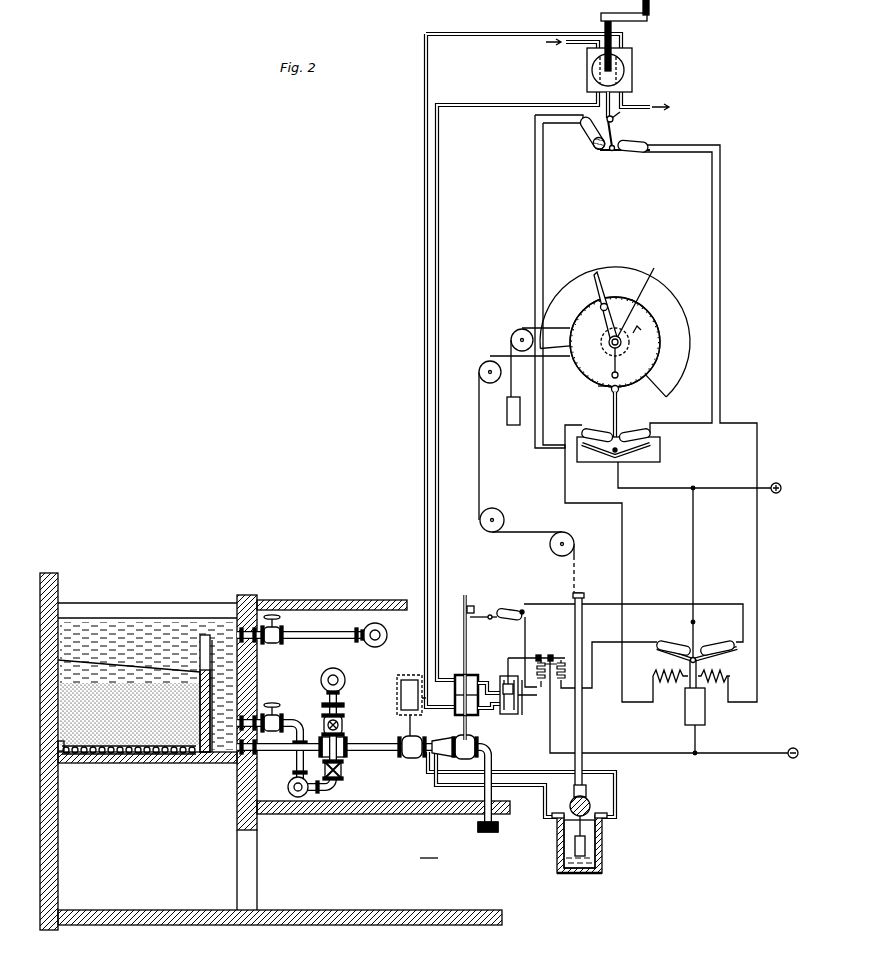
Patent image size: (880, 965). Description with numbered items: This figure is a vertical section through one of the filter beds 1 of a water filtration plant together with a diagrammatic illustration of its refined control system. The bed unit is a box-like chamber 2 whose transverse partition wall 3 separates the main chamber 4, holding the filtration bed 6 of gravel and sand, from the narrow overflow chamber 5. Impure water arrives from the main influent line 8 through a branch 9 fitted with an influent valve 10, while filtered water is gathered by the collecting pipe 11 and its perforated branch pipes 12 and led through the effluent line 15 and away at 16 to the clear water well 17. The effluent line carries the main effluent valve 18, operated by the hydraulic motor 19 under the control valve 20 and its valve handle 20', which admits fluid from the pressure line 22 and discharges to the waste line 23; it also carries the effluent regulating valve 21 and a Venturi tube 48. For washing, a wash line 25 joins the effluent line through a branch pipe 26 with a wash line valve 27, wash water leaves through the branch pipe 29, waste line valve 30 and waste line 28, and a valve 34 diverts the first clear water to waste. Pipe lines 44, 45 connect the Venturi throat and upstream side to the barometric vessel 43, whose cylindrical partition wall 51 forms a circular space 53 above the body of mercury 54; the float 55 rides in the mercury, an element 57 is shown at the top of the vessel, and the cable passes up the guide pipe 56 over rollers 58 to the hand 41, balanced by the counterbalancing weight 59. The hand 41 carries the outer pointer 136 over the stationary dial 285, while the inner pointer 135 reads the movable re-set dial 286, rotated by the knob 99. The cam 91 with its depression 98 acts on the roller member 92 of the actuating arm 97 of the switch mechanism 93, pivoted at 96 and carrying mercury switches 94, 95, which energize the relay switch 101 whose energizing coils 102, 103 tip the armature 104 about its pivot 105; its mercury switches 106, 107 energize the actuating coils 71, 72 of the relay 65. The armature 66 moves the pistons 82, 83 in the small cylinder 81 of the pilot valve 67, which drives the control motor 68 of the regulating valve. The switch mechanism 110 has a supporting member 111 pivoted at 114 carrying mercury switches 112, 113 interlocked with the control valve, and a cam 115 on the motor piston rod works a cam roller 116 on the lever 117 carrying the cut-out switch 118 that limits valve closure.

The filter bed 1 is at (40, 676).
The box-like chamber 2 is at (135, 603).
The transverse partition wall 3 is at (205, 635).
The main chamber 4 is at (100, 667).
The overflow chamber 5 is at (211, 725).
The filtration bed 6 is at (142, 756).
The main influent line 8 is at (388, 633).
The branch 9 is at (322, 635).
The influent valve 10 is at (273, 612).
The collecting pipe 11 is at (58, 742).
The branch pipe 12 is at (110, 763).
The effluent line 15 is at (375, 744).
The outlet to clear water well 16 is at (478, 826).
The clear water well 17 is at (429, 850).
The main effluent valve 18 is at (411, 760).
The hydraulic motor 19 is at (400, 684).
The control valve 20 is at (631, 56).
The valve handle 20' is at (640, 12).
The effluent regulating valve 21 is at (460, 758).
The pressure line 22 is at (566, 44).
The waste line 23 is at (646, 105).
The wash line 25 is at (321, 675).
The branch pipe 26 is at (344, 705).
The wash line valve 27 is at (343, 724).
The waste line 28 is at (298, 798).
The branch pipe 29 is at (295, 768).
The waste line valve 30 is at (273, 707).
The valve 34 is at (343, 770).
The hand 41 is at (650, 275).
The barometric vessel 43 is at (602, 840).
The pipe line 44 is at (618, 778).
The pipe line 45 is at (545, 805).
The Venturi tube 48 is at (460, 738).
The cylindrical partition wall 51 is at (564, 838).
The circular space 53 is at (564, 828).
The body of mercury 54 is at (580, 873).
The float 55 is at (564, 860).
The guide pipe 56 is at (583, 736).
The float 57 is at (590, 810).
The roller 58 is at (512, 348).
The counterbalancing weight 59 is at (513, 425).
The relay 65 is at (566, 690).
The armature 66 is at (549, 655).
The pilot valve 67 is at (522, 716).
The control motor 68 is at (455, 680).
The actuating coil 71 is at (567, 672).
The actuating coil 72 is at (548, 686).
The small cylinder 81 is at (507, 660).
The piston 82 is at (503, 684).
The piston 83 is at (506, 714).
The cam 91 is at (568, 367).
The roller member 92 is at (620, 390).
The switch mechanism 93 is at (660, 452).
The mercury switch 94 is at (596, 430).
The mercury switch 95 is at (646, 430).
The pivot 96 is at (620, 455).
The actuating arm 97 is at (619, 412).
The depression 98 is at (598, 386).
The knob 99 is at (620, 375).
The relay switch 101 is at (738, 653).
The energizing coil 102 is at (662, 670).
The energizing coil 103 is at (732, 670).
The armature 104 is at (690, 690).
The pivot 105 is at (696, 656).
The mercury switch 106 is at (668, 639).
The mercury switch 107 is at (740, 632).
The switch mechanism 110 is at (622, 118).
The supporting member 111 is at (617, 153).
The mercury switch 112 is at (640, 142).
The mercury switch 113 is at (585, 132).
The pivot 114 is at (608, 152).
The cam 115 is at (467, 595).
The cam roller 116 is at (474, 606).
The lever 117 is at (482, 619).
The cut-out switch 118 is at (512, 606).
The inner pointer 135 is at (618, 270).
The outer pointer 136 is at (596, 286).
The stationary dial 285 is at (672, 292).
The movable re-set dial 286 is at (640, 330).